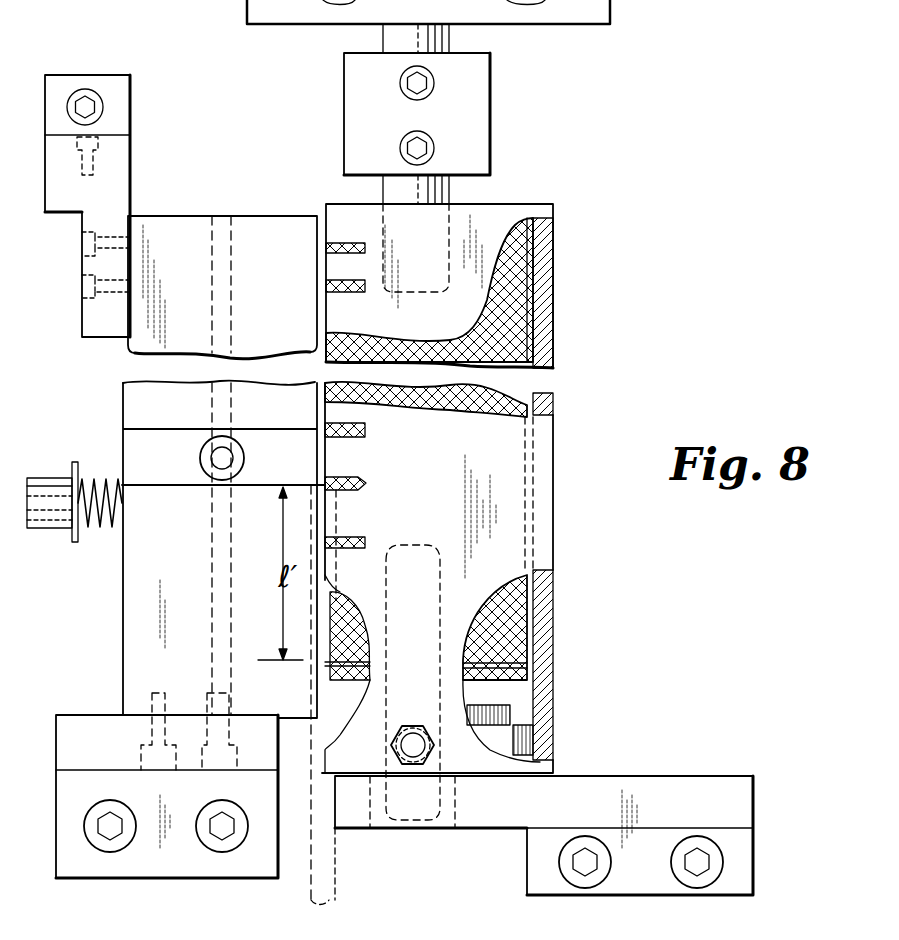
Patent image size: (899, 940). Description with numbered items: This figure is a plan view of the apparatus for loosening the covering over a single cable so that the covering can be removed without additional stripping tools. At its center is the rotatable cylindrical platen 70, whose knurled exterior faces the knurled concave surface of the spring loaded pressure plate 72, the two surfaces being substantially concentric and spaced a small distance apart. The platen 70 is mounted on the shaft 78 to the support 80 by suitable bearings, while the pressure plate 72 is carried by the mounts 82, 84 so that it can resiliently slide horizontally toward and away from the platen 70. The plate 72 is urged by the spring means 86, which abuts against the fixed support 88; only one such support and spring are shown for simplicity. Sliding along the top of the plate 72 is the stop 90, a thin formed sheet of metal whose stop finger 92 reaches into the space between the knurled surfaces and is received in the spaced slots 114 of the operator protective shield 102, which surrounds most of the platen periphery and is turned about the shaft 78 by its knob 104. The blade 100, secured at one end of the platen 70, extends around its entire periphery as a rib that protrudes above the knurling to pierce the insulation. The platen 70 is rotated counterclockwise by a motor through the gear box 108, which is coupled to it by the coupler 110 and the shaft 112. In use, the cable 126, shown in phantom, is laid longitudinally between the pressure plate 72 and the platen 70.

The rotatable cylindrical platen 70 is at (520, 632).
The spring loaded pressure plate 72 is at (122, 599).
The shaft 78 is at (408, 830).
The support 80 is at (750, 763).
The mount 82 is at (224, 888).
The mount 84 is at (138, 165).
The spring means 86 is at (106, 478).
The fixed support 88 is at (45, 478).
The stop 90 is at (182, 472).
The stop finger 92 is at (366, 483).
The blade 100 is at (530, 670).
The operator protective shield 102 is at (498, 210).
The knob 104 is at (413, 733).
The gear box 108 is at (612, 17).
The coupler 110 is at (493, 126).
The shaft 112 is at (383, 193).
The teeth 114 is at (365, 432).
The cable 126 is at (337, 886).